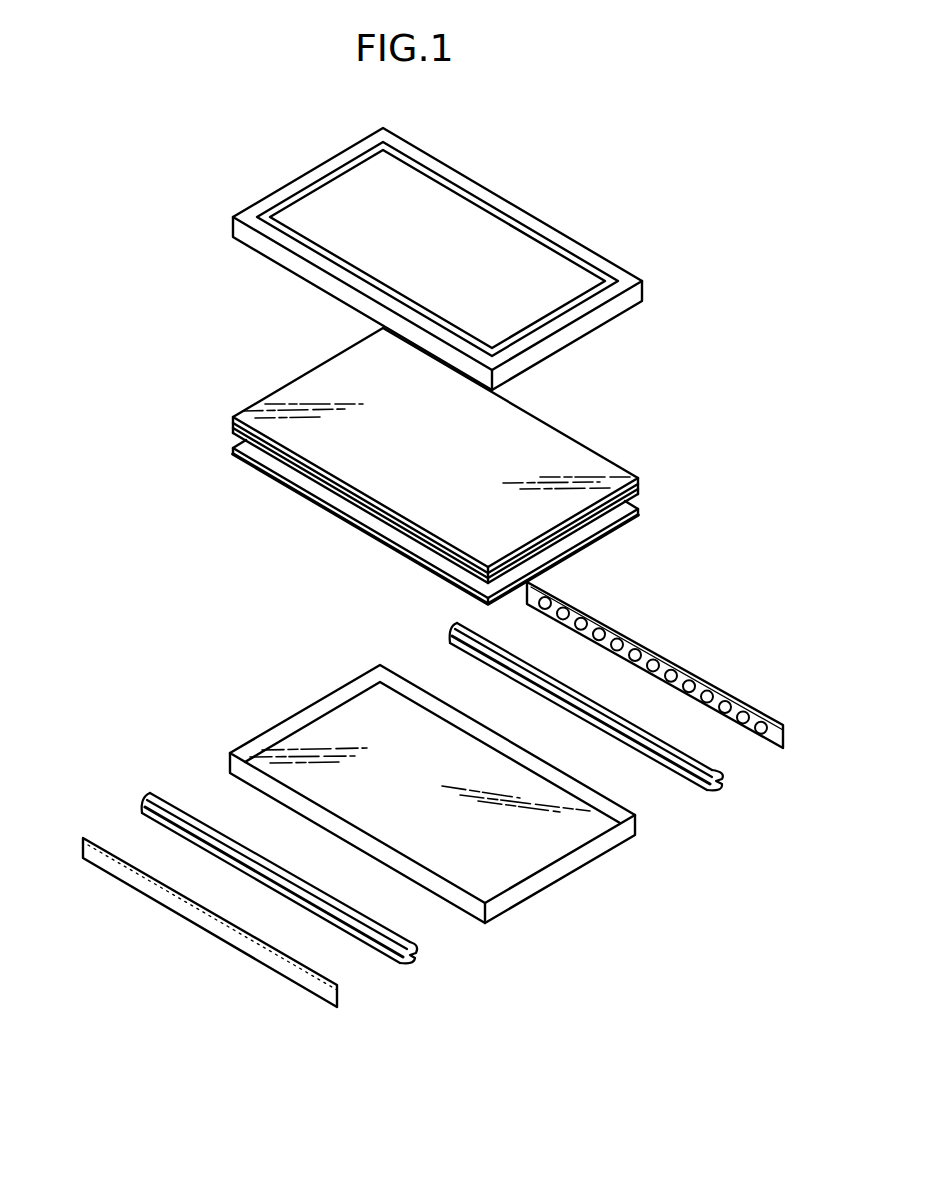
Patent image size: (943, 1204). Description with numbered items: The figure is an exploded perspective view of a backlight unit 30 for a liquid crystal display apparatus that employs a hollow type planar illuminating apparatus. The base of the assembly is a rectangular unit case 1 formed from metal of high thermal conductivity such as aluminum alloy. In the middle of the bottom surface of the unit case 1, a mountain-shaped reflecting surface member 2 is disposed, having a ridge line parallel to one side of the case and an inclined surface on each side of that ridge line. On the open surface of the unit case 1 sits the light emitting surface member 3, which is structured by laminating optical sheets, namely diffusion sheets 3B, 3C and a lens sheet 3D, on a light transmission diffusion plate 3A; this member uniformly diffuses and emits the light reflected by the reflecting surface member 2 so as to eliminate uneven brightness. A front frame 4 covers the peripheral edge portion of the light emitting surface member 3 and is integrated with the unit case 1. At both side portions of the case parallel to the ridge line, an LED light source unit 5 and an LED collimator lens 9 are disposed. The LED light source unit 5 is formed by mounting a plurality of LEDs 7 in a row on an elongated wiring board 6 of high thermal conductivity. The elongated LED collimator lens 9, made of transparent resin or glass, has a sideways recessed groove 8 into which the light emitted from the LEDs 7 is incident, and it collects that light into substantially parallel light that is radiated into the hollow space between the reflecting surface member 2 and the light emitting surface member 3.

The backlight unit 30 is at (696, 219).
The front frame 4 is at (603, 317).
The light emitting surface member 3 is at (497, 466).
The light transmission diffusion plate 3A is at (630, 515).
The diffusion sheet 3B is at (641, 488).
The diffusion sheet 3C is at (637, 478).
The lens sheet 3D is at (641, 483).
The unit case 1 is at (283, 725).
The reflecting surface member 2 is at (578, 825).
The LED light source unit 5 is at (442, 794).
The wiring board 6 is at (680, 657).
The LED 7 is at (635, 642).
The recessed groove 8 is at (720, 780).
The LED collimator lens 9 is at (522, 660).